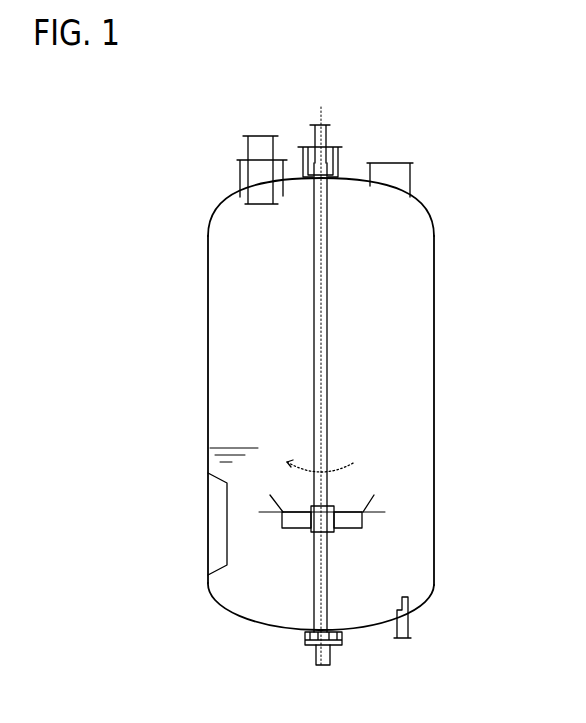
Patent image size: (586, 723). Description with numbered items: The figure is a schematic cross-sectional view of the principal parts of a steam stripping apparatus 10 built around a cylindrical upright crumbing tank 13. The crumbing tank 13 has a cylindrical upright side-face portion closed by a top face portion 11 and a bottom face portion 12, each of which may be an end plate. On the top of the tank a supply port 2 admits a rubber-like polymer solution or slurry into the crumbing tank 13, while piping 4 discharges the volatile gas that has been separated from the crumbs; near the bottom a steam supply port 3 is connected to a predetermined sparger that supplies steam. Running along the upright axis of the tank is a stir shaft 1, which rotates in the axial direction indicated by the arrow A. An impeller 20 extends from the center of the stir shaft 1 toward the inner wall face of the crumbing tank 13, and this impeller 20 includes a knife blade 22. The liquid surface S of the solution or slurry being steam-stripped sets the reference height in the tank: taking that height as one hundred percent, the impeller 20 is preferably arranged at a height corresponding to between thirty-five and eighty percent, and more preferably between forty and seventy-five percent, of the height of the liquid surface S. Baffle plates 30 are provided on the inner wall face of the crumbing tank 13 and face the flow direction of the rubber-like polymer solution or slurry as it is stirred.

The stir shaft 1 is at (328, 328).
The supply port 2 is at (261, 142).
The steam supply port 3 is at (403, 640).
The piping 4 is at (390, 173).
The steam stripping apparatus 10 is at (493, 290).
The top face portion 11 is at (220, 203).
The bottom face portion 12 is at (430, 603).
The crumbing tank 13 is at (205, 378).
The impeller 20 is at (355, 525).
The knife blade 22 is at (383, 508).
The baffle plates 30 is at (212, 550).
The liquid surface S is at (205, 452).
The arrow A is at (325, 457).